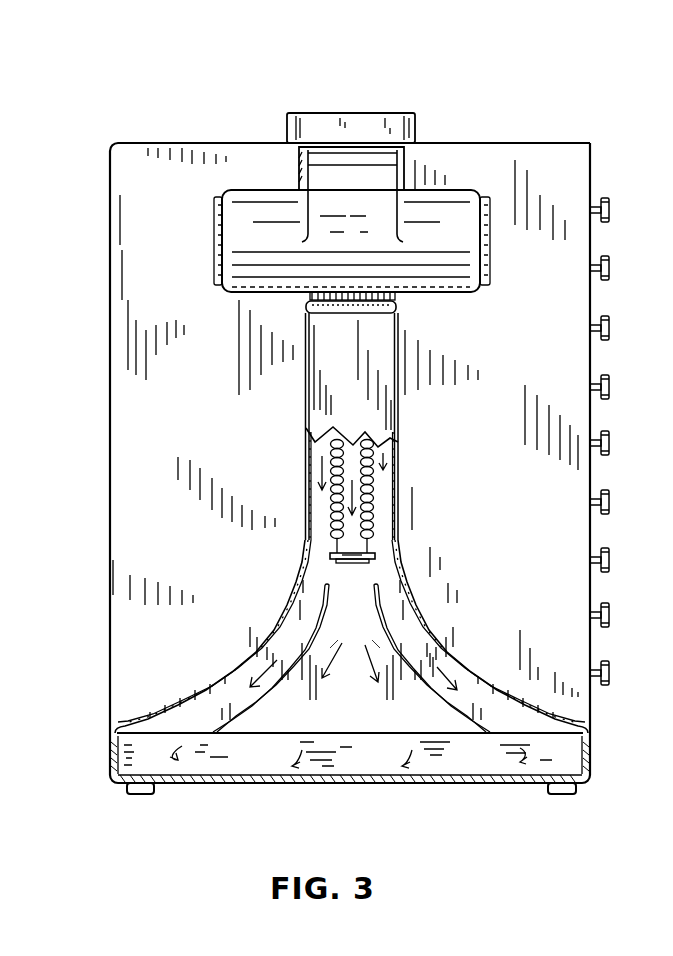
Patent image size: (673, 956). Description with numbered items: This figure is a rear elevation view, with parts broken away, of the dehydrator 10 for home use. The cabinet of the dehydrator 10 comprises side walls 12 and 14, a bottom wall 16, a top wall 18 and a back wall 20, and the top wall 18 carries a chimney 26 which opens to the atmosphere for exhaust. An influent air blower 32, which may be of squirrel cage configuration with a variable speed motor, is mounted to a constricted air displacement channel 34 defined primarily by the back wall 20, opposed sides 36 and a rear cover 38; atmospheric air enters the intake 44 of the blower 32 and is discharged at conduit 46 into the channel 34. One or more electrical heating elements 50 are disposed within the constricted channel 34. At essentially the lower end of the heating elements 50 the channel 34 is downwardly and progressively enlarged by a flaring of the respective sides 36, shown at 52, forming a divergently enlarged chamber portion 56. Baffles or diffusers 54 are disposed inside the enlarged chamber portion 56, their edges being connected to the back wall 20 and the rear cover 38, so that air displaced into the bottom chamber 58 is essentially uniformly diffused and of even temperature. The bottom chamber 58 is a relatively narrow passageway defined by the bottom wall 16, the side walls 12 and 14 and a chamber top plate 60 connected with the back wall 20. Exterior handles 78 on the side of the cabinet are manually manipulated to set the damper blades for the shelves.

The dehydrator 10 is at (138, 114).
The side wall 12 is at (590, 712).
The side wall 14 is at (108, 677).
The bottom wall 16 is at (470, 783).
The top wall 18 is at (198, 143).
The back wall 20 is at (514, 427).
The chimney 26 is at (375, 122).
The influent air blower 32 is at (460, 242).
The constricted air displacement channel 34 is at (385, 548).
The opposed sides 36 is at (307, 470).
The rear cover 38 is at (362, 417).
The intake 44 is at (390, 327).
The conduit 46 is at (380, 180).
The electrical heating elements 50 is at (335, 514).
The flairing of the walls 52 is at (268, 640).
The baffles or diffusers 54 is at (328, 589).
The divergently enlarged chamber portion 56 is at (350, 670).
The bottom chamber 58 is at (385, 768).
The chamber top plate 60 is at (277, 732).
The exterior handle 78 is at (610, 213).